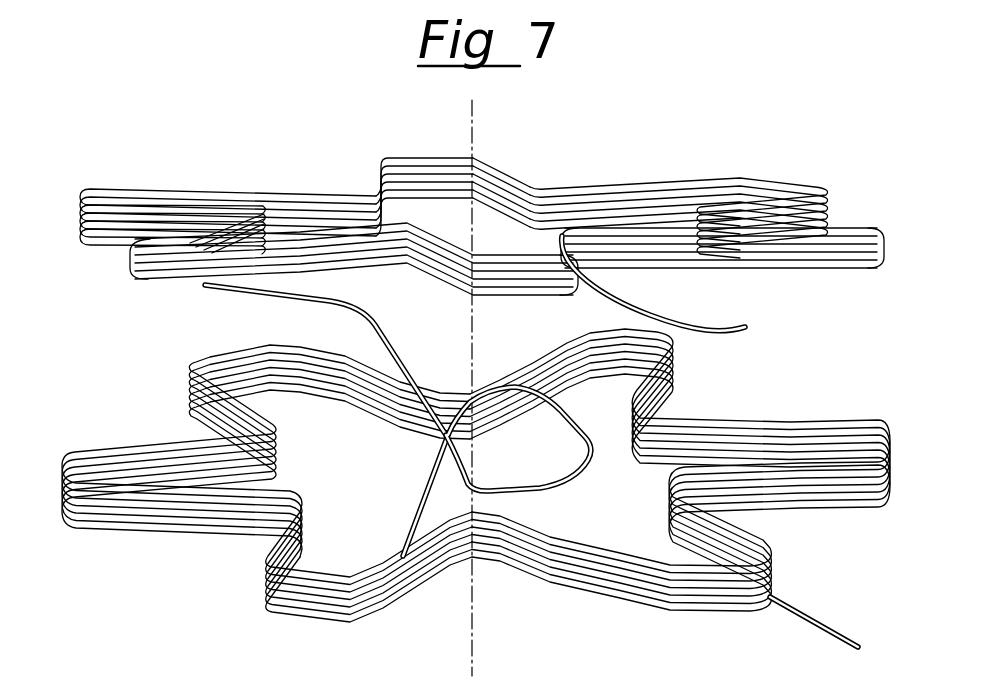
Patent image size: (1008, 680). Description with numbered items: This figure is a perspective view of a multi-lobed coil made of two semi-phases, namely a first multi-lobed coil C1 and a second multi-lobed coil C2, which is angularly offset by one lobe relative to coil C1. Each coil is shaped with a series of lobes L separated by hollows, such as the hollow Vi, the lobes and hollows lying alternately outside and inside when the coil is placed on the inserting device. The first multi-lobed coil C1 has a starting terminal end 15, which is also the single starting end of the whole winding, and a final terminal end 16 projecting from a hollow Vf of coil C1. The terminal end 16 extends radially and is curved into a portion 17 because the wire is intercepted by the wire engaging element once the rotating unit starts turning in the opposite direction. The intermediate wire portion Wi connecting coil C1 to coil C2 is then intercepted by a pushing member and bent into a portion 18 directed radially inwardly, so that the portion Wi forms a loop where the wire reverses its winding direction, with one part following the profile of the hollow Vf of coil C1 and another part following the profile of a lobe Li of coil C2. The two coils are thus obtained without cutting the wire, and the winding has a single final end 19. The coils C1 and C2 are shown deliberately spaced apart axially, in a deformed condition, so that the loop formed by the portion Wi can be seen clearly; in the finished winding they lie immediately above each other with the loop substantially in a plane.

The starting terminal end 15 is at (820, 626).
The final terminal end 16 is at (527, 511).
The curved portion 17 is at (527, 513).
The radially inwardly directed portion 18 is at (407, 462).
The final end 19 is at (637, 304).
The first multi-lobed coil C1 is at (482, 490).
The second multi-lobed coil C2 is at (482, 184).
The lobe L is at (267, 505).
The hollow Vi is at (378, 232).
The lobe of the second multi-lobed coil Li is at (531, 278).
The hollow of the first multi-lobed coil Vf is at (463, 587).
The intermediate wire portion Wi is at (560, 453).